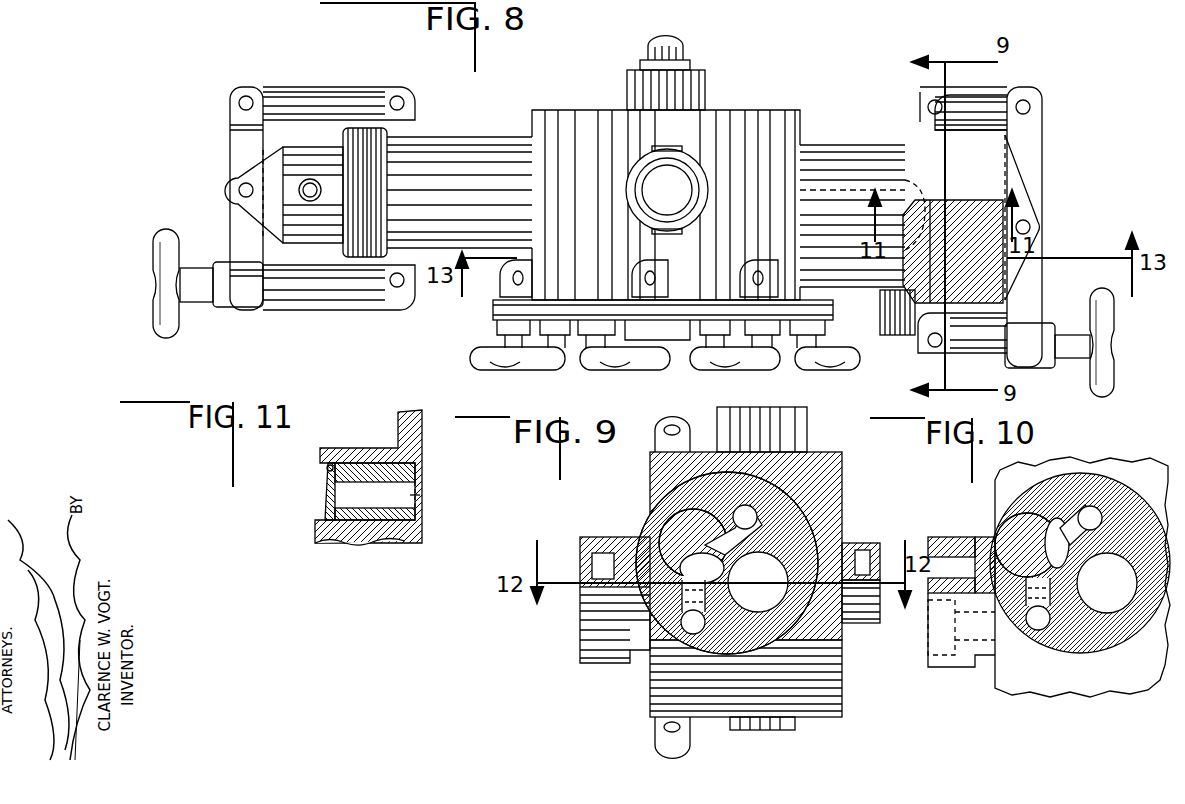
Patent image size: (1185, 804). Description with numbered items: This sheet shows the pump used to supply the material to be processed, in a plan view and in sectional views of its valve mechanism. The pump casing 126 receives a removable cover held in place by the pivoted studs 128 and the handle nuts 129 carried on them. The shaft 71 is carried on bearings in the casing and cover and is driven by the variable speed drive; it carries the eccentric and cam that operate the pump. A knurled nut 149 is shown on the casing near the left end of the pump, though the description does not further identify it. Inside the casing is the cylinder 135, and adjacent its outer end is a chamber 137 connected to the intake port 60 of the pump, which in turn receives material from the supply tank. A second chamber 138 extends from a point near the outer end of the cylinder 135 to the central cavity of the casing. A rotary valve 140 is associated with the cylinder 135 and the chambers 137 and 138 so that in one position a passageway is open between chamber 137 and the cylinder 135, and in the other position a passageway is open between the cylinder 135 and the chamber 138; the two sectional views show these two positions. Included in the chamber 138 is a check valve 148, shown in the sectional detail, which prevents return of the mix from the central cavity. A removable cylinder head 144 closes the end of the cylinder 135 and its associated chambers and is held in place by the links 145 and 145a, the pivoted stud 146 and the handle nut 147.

In FIG. 8, the shaft 71 is at (677, 50).
In FIG. 8, the pump casing 126 is at (478, 140).
In FIG. 9, the pump casing 126 is at (820, 460).
In FIG. 11, the pump casing 126 is at (358, 450).
In FIG. 8, the knurled nut 149 is at (362, 242).
In FIG. 8, the pivoted studs 128 is at (495, 300).
In FIG. 8, the handle nuts 129 is at (494, 368).
In FIG. 8, the check valve 148 is at (905, 185).
In FIG. 11, the check valve 148 is at (328, 498).
In FIG. 8, the link 145 is at (1000, 97).
In FIG. 8, the link 145a is at (1025, 152).
In FIG. 8, the removable cylinder head 144 is at (1025, 185).
In FIG. 8, the pivoted stud 146 is at (986, 352).
In FIG. 8, the handle nut 147 is at (1115, 345).
In FIG. 9, the rotary valve 140 is at (655, 520).
In FIG. 10, the rotary valve 140 is at (995, 528).
In FIG. 9, the chamber 138 is at (752, 518).
In FIG. 10, the chamber 138 is at (1100, 500).
In FIG. 11, the chamber 138 is at (420, 498).
In FIG. 9, the cylinder 135 is at (758, 582).
In FIG. 10, the cylinder 135 is at (1107, 583).
In FIG. 9, the chamber 137 is at (690, 630).
In FIG. 10, the chamber 137 is at (1037, 628).
In FIG. 9, the intake port 60 is at (582, 633).
In FIG. 10, the intake port 60 is at (928, 645).